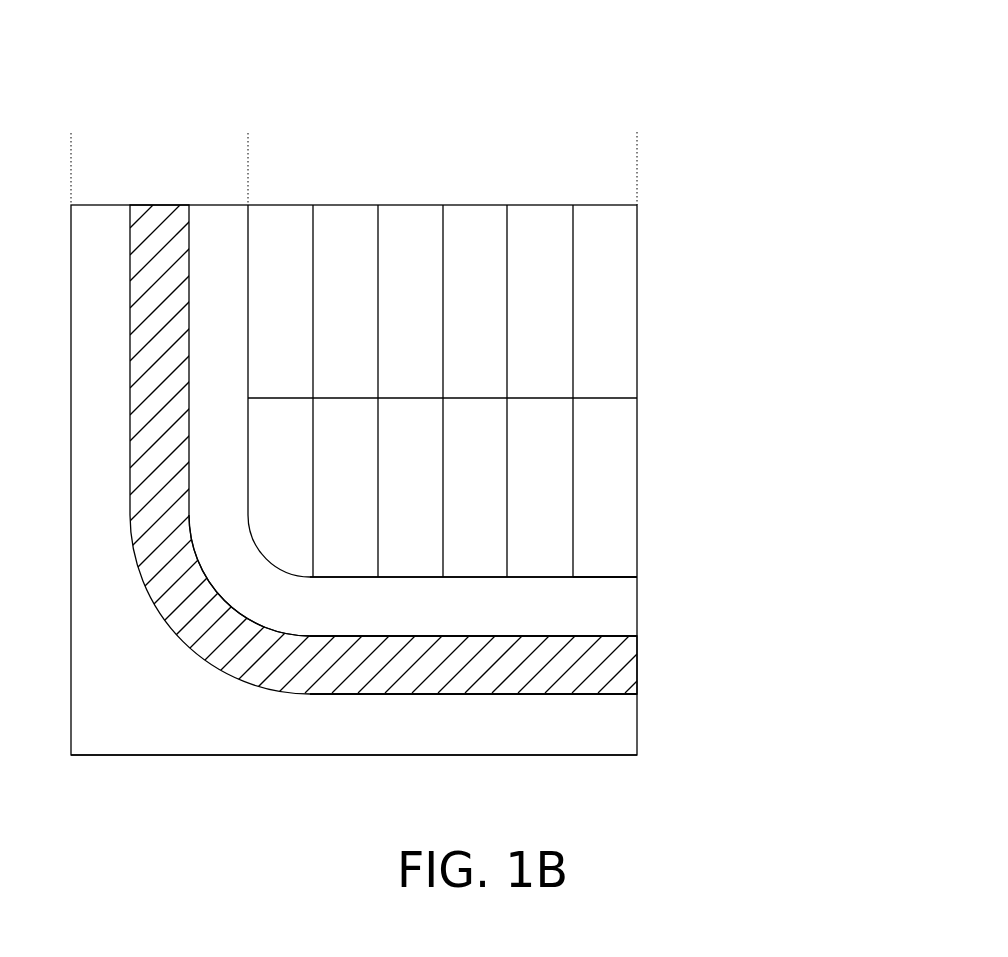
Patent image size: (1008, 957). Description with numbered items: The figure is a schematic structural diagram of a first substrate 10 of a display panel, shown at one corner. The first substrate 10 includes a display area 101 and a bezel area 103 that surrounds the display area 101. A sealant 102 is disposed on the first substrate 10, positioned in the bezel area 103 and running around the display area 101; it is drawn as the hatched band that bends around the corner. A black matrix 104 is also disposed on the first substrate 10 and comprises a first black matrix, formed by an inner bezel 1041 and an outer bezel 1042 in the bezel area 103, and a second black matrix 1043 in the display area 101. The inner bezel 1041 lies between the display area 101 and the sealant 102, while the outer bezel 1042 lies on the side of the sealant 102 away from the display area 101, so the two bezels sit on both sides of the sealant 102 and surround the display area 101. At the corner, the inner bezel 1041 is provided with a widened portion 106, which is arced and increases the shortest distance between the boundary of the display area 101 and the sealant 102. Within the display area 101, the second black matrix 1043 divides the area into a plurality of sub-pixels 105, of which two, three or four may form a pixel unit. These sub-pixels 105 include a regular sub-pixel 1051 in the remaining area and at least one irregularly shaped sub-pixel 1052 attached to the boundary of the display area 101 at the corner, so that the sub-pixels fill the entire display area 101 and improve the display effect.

The first substrate 10 is at (92, 47).
The display area 101 is at (417, 162).
The sealant 102 is at (432, 667).
The bezel area 103 is at (145, 162).
The black matrix 104 is at (469, 647).
The inner bezel 1041 is at (597, 610).
The outer bezel 1042 is at (588, 728).
The second black matrix 1043 is at (575, 540).
The sub-pixels 105 is at (541, 391).
The regular sub-pixel 1051 is at (473, 312).
The irregularly shaped sub-pixel 1052 is at (298, 523).
The widened portion 106 is at (260, 545).